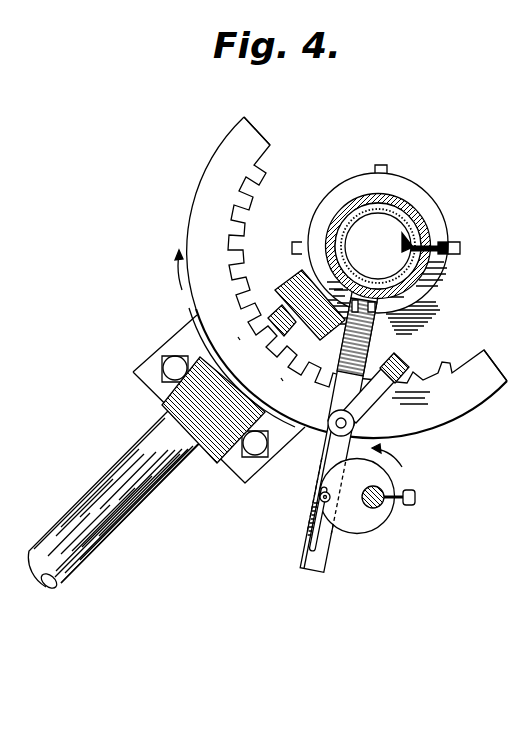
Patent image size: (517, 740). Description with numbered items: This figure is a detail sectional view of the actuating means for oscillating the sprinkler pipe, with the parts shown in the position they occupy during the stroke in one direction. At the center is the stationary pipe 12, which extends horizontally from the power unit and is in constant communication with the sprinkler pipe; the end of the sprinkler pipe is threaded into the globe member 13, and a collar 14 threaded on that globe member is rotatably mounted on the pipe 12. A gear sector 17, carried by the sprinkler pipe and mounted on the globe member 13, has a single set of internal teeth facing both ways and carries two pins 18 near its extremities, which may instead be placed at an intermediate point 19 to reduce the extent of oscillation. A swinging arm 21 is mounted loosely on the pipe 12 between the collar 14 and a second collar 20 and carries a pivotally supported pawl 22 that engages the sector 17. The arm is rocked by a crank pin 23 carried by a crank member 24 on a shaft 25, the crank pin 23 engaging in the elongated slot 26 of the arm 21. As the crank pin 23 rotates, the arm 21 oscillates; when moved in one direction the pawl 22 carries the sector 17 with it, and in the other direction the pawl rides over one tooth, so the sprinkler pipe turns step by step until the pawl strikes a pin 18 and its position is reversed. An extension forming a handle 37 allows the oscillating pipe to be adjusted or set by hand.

The stationary pipe 12 is at (400, 236).
The globe member 13 is at (300, 272).
The collar 14 is at (418, 165).
The gear sector 17 is at (478, 392).
The pins 18 is at (240, 157).
The intermediate point 19 is at (281, 378).
The collar 20 is at (452, 268).
The swinging arm 21 is at (365, 346).
The pawl 22 is at (405, 376).
The crank pin 23 is at (320, 497).
The crank member 24 is at (360, 522).
The shaft 25 is at (385, 496).
The elongated slot 26 is at (309, 542).
The handle extension 37 is at (118, 480).